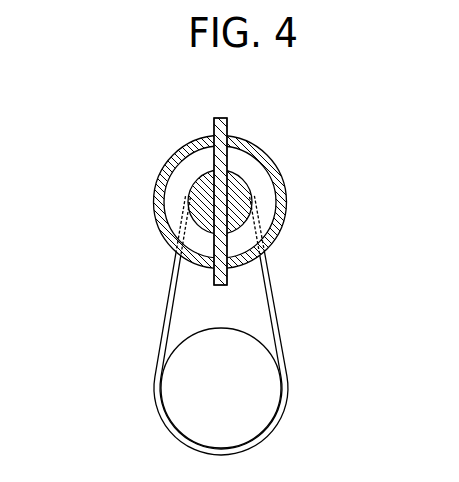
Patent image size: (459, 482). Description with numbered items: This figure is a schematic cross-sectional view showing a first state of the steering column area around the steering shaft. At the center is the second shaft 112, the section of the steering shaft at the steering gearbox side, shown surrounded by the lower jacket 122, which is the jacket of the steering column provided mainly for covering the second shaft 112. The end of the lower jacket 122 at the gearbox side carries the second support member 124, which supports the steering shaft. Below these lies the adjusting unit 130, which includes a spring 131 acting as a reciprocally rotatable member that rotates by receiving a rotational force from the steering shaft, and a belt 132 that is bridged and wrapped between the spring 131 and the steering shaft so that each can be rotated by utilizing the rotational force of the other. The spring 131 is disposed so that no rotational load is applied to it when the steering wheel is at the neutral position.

The second shaft 112 is at (252, 185).
The lower jacket 122 is at (287, 204).
The second support member 124 is at (228, 120).
The adjusting unit 130 is at (217, 325).
The spring 131 is at (255, 388).
The belt 132 is at (276, 306).